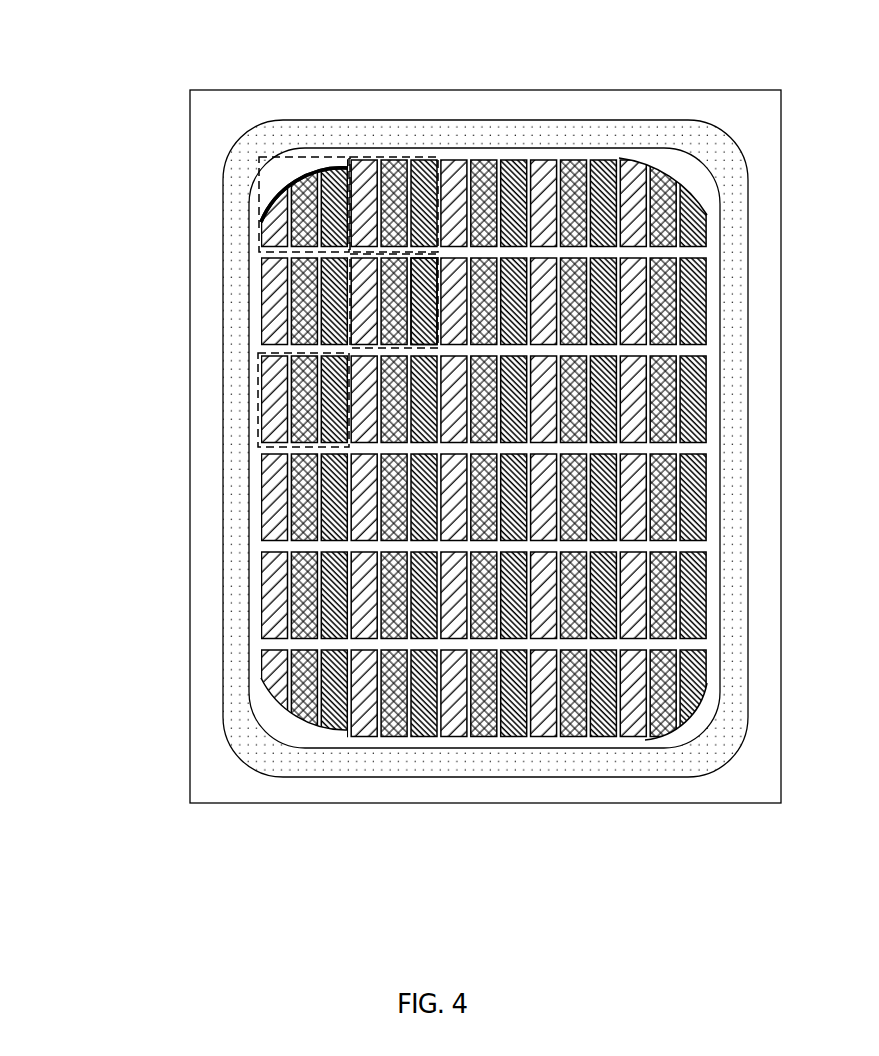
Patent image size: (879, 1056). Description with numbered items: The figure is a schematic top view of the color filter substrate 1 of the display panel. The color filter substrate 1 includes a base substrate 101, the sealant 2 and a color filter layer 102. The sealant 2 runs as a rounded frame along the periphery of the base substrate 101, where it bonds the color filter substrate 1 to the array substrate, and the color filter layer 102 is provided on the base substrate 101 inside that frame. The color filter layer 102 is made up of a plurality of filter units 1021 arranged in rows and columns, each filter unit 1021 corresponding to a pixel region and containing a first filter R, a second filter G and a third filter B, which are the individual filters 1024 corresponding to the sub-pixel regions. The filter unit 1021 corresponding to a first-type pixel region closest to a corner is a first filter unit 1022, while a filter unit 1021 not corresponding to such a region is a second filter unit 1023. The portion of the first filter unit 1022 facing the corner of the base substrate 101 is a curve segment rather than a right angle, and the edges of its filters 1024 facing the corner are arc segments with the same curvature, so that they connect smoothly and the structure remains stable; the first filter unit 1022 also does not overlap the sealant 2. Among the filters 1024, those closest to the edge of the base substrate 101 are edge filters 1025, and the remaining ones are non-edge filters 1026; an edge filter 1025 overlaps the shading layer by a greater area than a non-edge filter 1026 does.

The color filter substrate 1 is at (408, 492).
The base substrate 101 is at (690, 803).
The color filter layer 102 is at (371, 468).
The filter unit 1021 is at (112, 235).
The first filter unit 1022 is at (262, 238).
The second filter unit 1023 is at (367, 302).
The filter 1024 is at (342, 232).
The edge filter 1025 is at (304, 195).
The non-edge filter 1026 is at (428, 302).
The sealant 2 is at (473, 132).